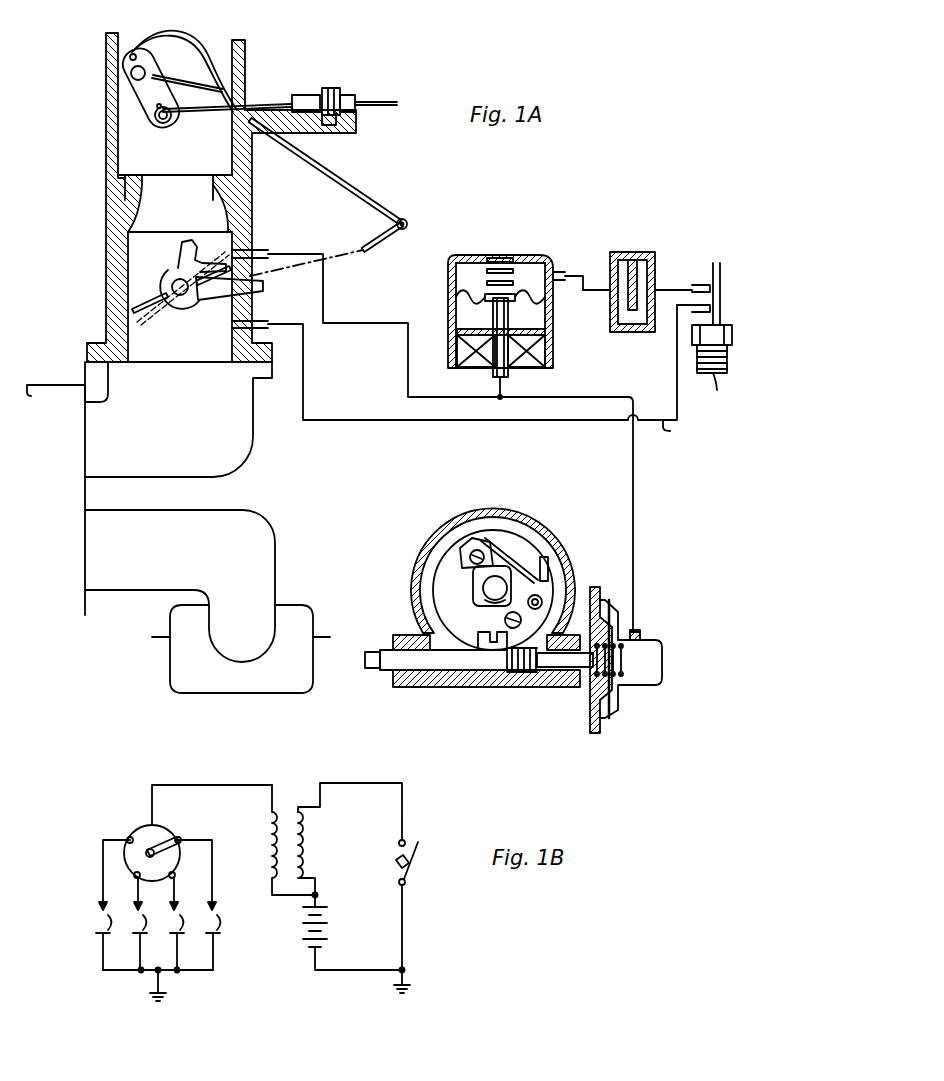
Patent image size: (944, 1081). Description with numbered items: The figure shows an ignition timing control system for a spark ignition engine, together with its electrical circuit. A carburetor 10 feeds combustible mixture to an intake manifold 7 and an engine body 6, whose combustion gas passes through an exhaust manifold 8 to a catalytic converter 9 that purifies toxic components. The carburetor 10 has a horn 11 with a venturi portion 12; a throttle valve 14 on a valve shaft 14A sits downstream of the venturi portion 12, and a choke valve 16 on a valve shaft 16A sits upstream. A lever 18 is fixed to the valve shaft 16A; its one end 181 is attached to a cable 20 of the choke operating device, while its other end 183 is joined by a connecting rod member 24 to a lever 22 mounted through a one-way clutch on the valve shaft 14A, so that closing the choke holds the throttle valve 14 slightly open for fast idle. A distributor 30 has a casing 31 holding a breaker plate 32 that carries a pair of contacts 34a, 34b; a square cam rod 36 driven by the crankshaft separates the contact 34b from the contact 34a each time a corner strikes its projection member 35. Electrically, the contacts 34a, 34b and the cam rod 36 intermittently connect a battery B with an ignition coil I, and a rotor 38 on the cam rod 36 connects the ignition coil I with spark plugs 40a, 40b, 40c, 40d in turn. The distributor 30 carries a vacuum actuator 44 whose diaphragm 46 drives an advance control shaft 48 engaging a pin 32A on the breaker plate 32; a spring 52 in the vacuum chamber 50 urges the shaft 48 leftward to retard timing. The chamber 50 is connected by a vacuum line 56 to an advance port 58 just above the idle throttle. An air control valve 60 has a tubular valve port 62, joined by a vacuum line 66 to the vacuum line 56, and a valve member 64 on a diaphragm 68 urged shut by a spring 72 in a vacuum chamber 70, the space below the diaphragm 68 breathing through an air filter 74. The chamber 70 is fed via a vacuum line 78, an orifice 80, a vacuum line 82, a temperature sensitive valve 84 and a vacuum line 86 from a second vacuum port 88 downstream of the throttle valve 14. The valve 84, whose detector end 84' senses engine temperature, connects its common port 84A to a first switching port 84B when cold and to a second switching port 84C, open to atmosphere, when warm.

In FIG. 1A, the engine body 6 is at (65, 387).
In FIG. 1A, the intake manifold 7 is at (218, 462).
In FIG. 1A, the exhaust manifold 8 is at (253, 527).
In FIG. 1A, the catalytic converter 9 is at (267, 684).
In FIG. 1A, the carburetor 10 is at (98, 141).
In FIG. 1A, the horn 11 is at (107, 157).
In FIG. 1A, the venturi portion 12 is at (128, 195).
In FIG. 1A, the throttle valve 14 is at (143, 303).
In FIG. 1A, the valve shaft 14A is at (163, 280).
In FIG. 1A, the choke valve 16 is at (215, 85).
In FIG. 1A, the valve shaft 16A is at (132, 75).
In FIG. 1A, the lever 18 is at (140, 103).
In FIG. 1A, the one end of lever 181 is at (172, 122).
In FIG. 1A, the other end of lever 183 is at (127, 53).
In FIG. 1A, the cable 20 is at (280, 103).
In FIG. 1A, the lever 22 is at (213, 307).
In FIG. 1A, the connecting rod member 24 is at (346, 180).
In FIG. 1A, the distributor 30 is at (533, 700).
In FIG. 1A, the casing 31 is at (457, 513).
In FIG. 1A, the breaker plate 32 is at (440, 587).
In FIG. 1A, the pin 32A is at (493, 640).
In FIG. 1A, the contact 34a is at (500, 537).
In FIG. 1B, the contact 34a is at (408, 841).
In FIG. 1A, the contact 34b is at (517, 573).
In FIG. 1B, the contact 34b is at (414, 860).
In FIG. 1A, the projection member 35 is at (548, 557).
In FIG. 1A, the cam rod 36 is at (452, 578).
In FIG. 1B, the cam rod 36 is at (395, 862).
In FIG. 1B, the rotor 38 is at (153, 848).
In FIG. 1B, the spark plug 40a is at (177, 920).
In FIG. 1B, the spark plug 40b is at (193, 924).
In FIG. 1B, the spark plug 40c is at (155, 924).
In FIG. 1B, the spark plug 40d is at (120, 905).
In FIG. 1A, the actuator 44 is at (623, 700).
In FIG. 1A, the diaphragm 46 is at (604, 705).
In FIG. 1A, the advance control shaft 48 is at (462, 663).
In FIG. 1A, the vacuum chamber 50 is at (600, 597).
In FIG. 1A, the spring 52 is at (630, 684).
In FIG. 1A, the vacuum line 56 is at (378, 322).
In FIG. 1A, the vacuum port 58 is at (267, 250).
In FIG. 1A, the air control valve 60 is at (537, 242).
In FIG. 1A, the valve port 62 is at (517, 317).
In FIG. 1A, the valve member 64 is at (490, 303).
In FIG. 1A, the vacuum line 66 is at (500, 386).
In FIG. 1A, the diaphragm 68 is at (467, 293).
In FIG. 1A, the vacuum chamber 70 is at (457, 260).
In FIG. 1A, the spring 72 is at (490, 272).
In FIG. 1A, the air filter 74 is at (544, 352).
In FIG. 1A, the vacuum line 78 is at (582, 273).
In FIG. 1A, the orifice 80 is at (638, 240).
In FIG. 1A, the vacuum line 82 is at (673, 287).
In FIG. 1A, the temperature sensitive valve 84 is at (732, 313).
In FIG. 1A, the common port 84A is at (713, 280).
In FIG. 1A, the first switching port 84B is at (697, 308).
In FIG. 1A, the second switching port 84C is at (720, 292).
In FIG. 1A, the detector end 84' is at (716, 394).
In FIG. 1A, the vacuum line 86 is at (683, 436).
In FIG. 1A, the second vacuum port 88 is at (257, 330).
In FIG. 1B, the ignition coil I is at (288, 802).
In FIG. 1B, the battery B is at (307, 920).